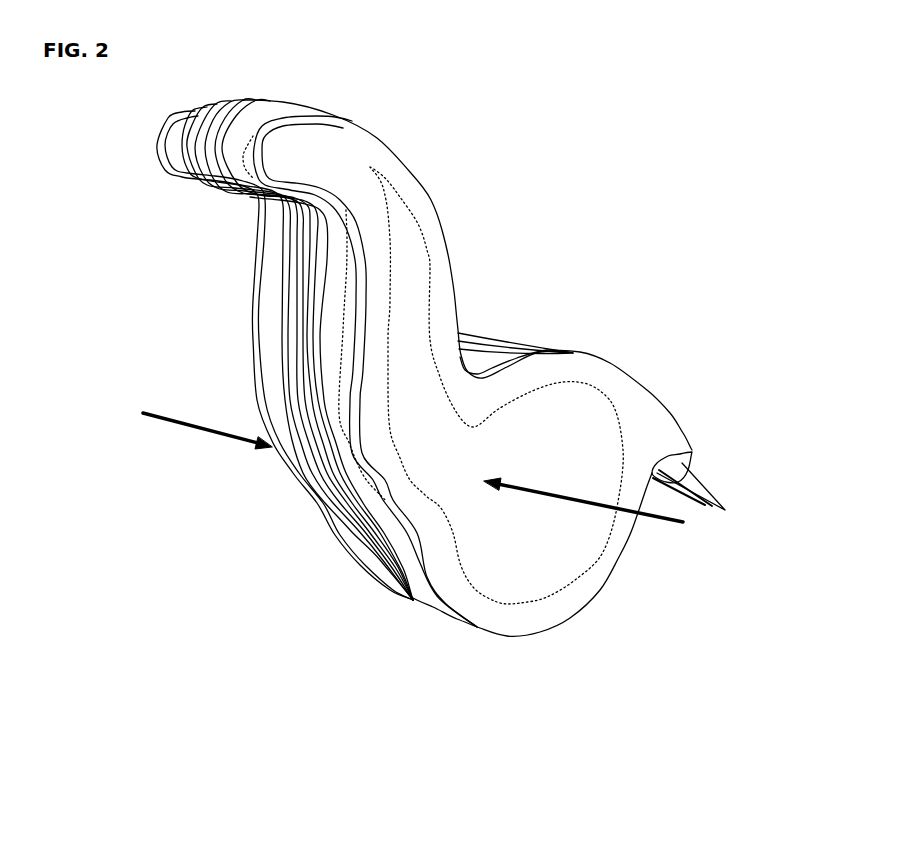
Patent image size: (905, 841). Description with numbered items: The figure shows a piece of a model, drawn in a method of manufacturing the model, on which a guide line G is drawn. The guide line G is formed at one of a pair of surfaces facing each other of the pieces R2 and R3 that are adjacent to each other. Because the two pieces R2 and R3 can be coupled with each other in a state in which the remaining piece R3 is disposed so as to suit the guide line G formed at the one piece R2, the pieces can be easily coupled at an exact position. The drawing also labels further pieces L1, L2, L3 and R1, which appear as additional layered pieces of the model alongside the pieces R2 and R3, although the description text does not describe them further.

The guide line G is at (386, 332).
The first left layer L1 is at (363, 533).
The second left layer L2 is at (350, 522).
The third left layer L3 is at (317, 505).
The first right layer R1 is at (375, 565).
The piece R2 is at (413, 578).
The piece R3 is at (545, 612).